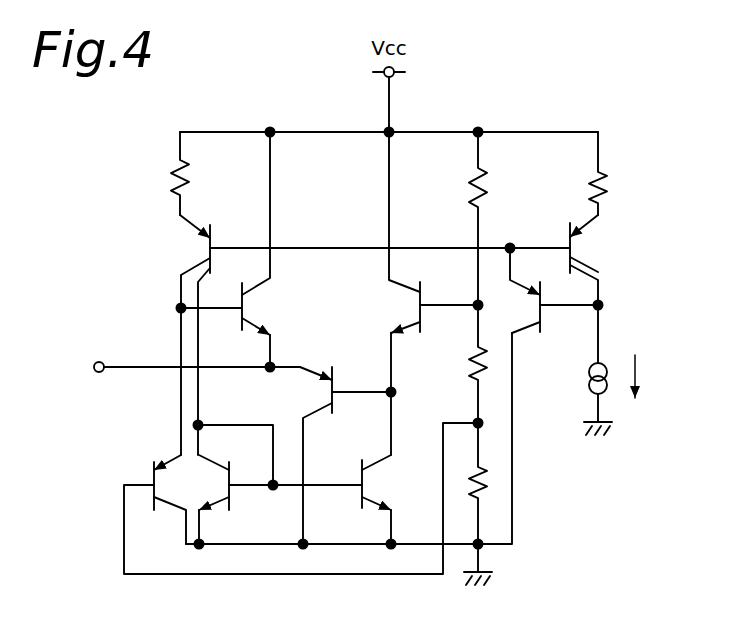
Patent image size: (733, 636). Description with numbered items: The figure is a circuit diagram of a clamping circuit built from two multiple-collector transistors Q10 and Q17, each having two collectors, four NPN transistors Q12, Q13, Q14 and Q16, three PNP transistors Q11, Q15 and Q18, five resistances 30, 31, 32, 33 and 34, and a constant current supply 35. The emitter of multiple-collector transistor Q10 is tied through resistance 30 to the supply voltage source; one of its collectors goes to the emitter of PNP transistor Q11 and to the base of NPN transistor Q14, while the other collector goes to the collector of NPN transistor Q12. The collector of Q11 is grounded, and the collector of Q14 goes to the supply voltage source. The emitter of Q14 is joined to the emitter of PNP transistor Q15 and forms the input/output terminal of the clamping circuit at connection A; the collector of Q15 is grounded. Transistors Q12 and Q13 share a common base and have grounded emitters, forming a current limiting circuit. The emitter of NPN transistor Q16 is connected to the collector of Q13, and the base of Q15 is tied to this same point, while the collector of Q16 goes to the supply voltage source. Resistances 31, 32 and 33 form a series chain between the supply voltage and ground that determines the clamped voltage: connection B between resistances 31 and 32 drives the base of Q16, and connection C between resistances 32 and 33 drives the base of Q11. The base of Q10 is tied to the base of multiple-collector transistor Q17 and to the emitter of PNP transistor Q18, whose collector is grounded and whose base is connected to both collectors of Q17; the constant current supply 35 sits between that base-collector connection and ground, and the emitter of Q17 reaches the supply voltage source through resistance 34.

The resistance 30 is at (172, 178).
The resistance 31 is at (488, 178).
The resistance 32 is at (470, 362).
The resistance 33 is at (470, 478).
The resistance 34 is at (608, 190).
The constant current supply 35 is at (602, 362).
The multiple-collector transistor Q10 is at (208, 248).
The PNP transistor Q11 is at (150, 482).
The NPN transistor Q12 is at (232, 490).
The NPN transistor Q13 is at (366, 483).
The NPN transistor Q14 is at (248, 312).
The PNP transistor Q15 is at (327, 394).
The NPN transistor Q16 is at (405, 313).
The multiple-collector transistor Q17 is at (578, 245).
The PNP transistor Q18 is at (545, 316).
The connection A is at (185, 366).
The connection B is at (469, 291).
The connection C is at (470, 410).